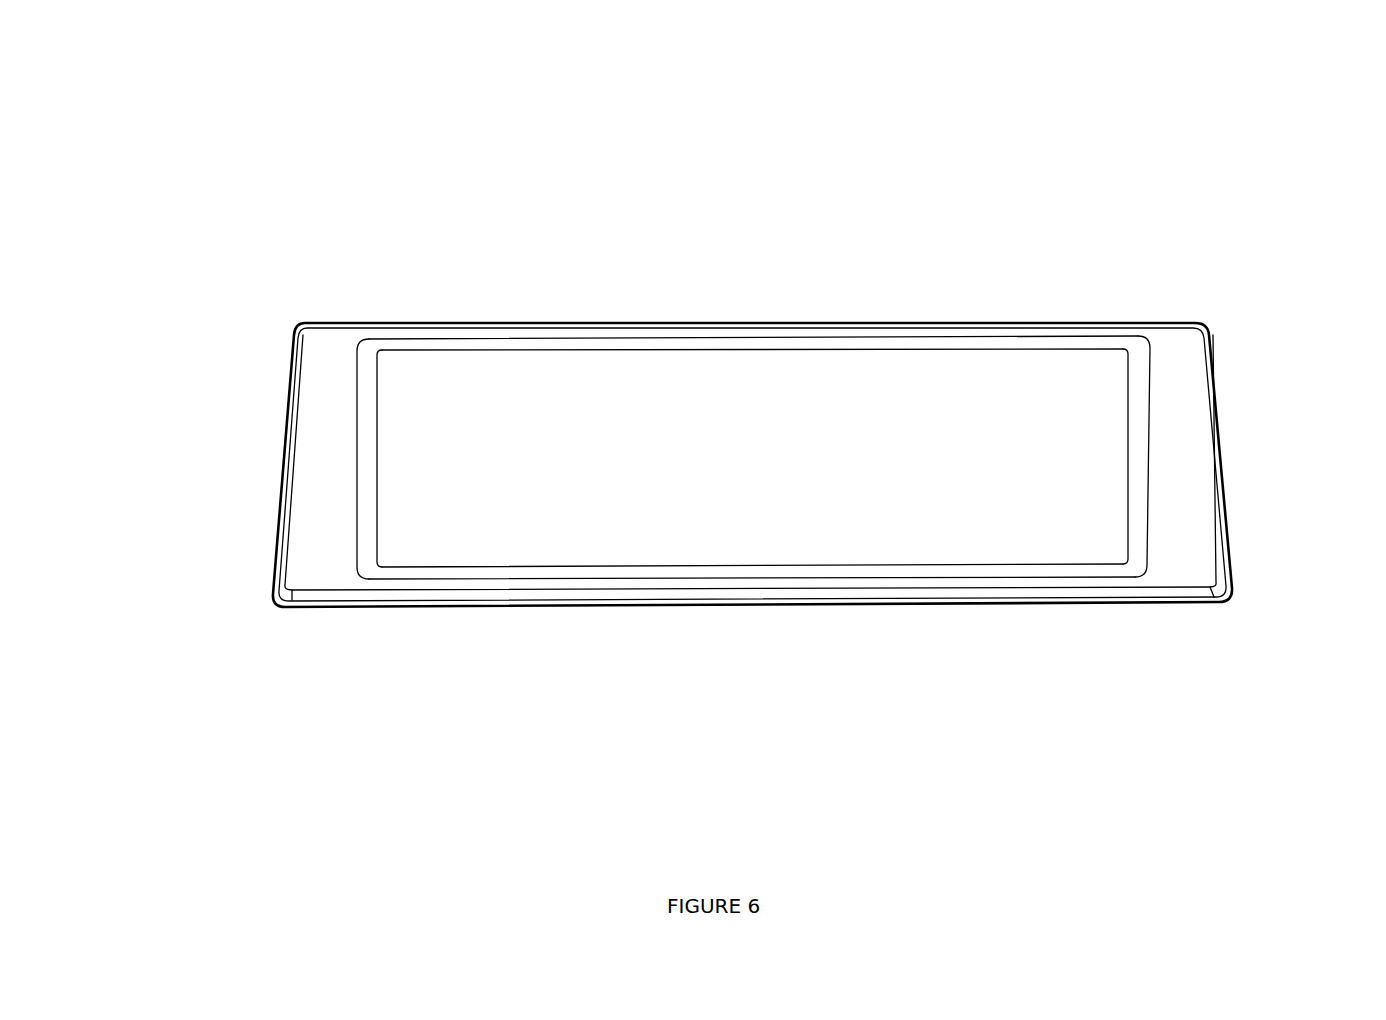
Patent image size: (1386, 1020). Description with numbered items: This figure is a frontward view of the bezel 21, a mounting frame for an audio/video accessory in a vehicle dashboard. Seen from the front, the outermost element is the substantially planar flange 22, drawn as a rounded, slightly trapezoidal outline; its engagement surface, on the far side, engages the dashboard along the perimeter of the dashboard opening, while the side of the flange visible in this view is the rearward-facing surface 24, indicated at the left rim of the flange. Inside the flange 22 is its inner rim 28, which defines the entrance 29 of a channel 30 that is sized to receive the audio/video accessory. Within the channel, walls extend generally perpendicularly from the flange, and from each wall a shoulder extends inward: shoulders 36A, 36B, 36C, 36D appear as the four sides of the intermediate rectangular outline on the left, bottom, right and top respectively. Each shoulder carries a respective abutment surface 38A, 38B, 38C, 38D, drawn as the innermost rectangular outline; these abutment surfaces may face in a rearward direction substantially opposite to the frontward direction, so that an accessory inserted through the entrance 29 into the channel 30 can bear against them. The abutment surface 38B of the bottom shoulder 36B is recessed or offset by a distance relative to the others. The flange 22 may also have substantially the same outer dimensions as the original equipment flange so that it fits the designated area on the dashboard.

The bezel 21 is at (707, 213).
The flange 22 is at (1181, 357).
The rearward-facing surface 24 is at (327, 385).
The inner rim 28 is at (875, 337).
The entrance 29 is at (720, 459).
The channel 30 is at (700, 473).
The shoulder 36A is at (367, 445).
The shoulder 36B is at (785, 572).
The shoulder 36C is at (1137, 467).
The shoulder 36D is at (1030, 346).
The abutment surface 38A is at (367, 487).
The abutment surface 38B is at (548, 565).
The abutment surface 38C is at (1137, 505).
The abutment surface 38D is at (460, 345).